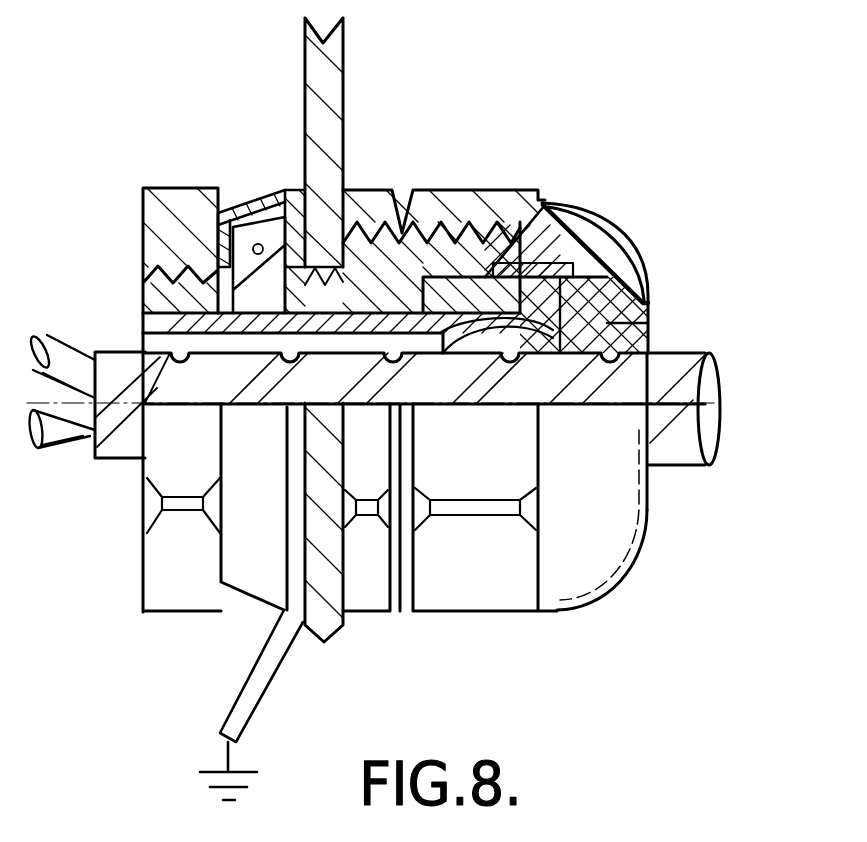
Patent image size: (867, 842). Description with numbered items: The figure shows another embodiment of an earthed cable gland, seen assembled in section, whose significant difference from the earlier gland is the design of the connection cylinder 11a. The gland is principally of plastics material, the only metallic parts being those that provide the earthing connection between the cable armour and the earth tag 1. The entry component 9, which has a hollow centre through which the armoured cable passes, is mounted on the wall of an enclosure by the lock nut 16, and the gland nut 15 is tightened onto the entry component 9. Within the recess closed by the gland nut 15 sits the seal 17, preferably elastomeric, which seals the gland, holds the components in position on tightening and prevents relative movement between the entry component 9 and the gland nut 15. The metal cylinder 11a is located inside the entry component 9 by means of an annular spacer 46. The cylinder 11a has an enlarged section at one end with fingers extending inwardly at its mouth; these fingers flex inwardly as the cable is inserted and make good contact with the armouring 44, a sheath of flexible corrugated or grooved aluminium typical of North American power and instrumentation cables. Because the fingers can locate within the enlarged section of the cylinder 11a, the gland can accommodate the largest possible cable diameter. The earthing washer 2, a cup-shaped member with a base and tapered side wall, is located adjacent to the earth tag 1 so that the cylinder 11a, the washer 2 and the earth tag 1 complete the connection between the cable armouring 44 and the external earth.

The earth tag 1 is at (270, 667).
The earthing washer 2 is at (262, 197).
The entry component 9 is at (495, 255).
The connection cylinder 11a is at (371, 283).
The gland nut 15 is at (612, 227).
The lock nut 16 is at (142, 582).
The seal 17 is at (610, 290).
The armouring 44 is at (127, 367).
The annular spacer 46 is at (457, 290).